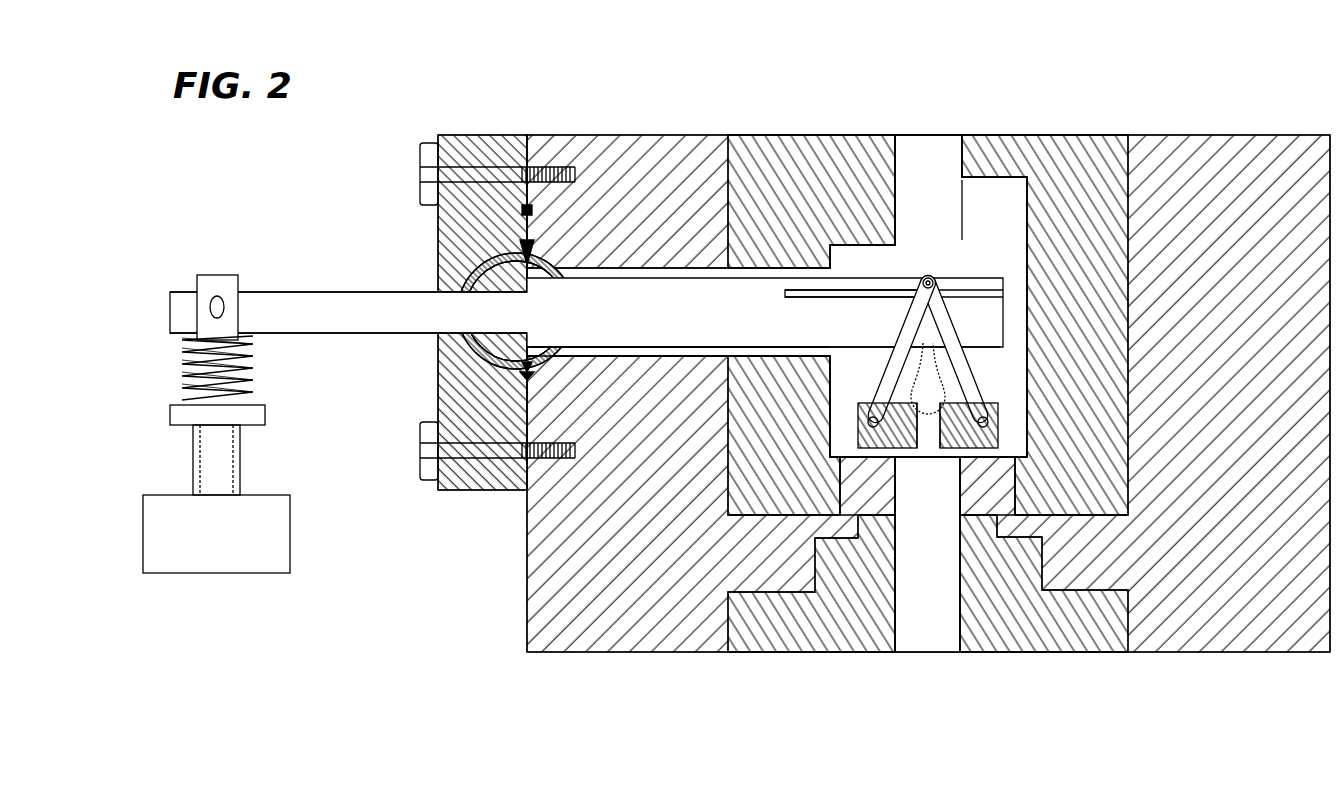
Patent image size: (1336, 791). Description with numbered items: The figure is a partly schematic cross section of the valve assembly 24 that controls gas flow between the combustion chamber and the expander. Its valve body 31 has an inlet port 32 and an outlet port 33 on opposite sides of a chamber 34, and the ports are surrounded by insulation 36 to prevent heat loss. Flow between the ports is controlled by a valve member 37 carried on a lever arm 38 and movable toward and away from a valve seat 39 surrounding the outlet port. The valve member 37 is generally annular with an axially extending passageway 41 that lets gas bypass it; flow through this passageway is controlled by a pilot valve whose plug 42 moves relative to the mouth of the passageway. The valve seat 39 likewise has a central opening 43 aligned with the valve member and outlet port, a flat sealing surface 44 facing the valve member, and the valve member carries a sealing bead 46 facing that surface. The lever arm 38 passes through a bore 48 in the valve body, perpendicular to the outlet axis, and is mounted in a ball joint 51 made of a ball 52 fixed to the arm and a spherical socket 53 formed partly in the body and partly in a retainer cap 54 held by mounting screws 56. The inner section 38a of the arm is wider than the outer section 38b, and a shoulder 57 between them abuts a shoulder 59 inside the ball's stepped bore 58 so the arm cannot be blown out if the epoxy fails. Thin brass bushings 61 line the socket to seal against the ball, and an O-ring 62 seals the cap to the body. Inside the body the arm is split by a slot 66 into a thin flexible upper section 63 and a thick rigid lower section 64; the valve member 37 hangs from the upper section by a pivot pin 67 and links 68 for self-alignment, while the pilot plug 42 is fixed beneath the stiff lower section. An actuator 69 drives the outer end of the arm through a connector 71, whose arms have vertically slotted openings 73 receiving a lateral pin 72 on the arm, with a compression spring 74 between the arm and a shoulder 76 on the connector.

The valve assembly 24 is at (335, 215).
The valve body 31 is at (715, 150).
The inlet port 32 is at (950, 140).
The outlet port 33 is at (900, 640).
The chamber 34 is at (955, 223).
The insulation 36 is at (810, 140).
The valve member 37 is at (870, 390).
The lever arm 38 is at (670, 295).
The inner section of the lever arm 38a is at (640, 342).
The outer section of the lever arm 38b is at (370, 300).
The valve seat 39 is at (895, 500).
The passageway 41 is at (935, 450).
The plug 42 is at (945, 395).
The central opening 43 is at (952, 520).
The sealing surface 44 is at (975, 455).
The sealing bead 46 is at (955, 460).
The bore 48 is at (710, 348).
The ball joint 51 is at (470, 470).
The ball 52 is at (445, 270).
The spherical socket 53 is at (545, 240).
The retainer cap 54 is at (470, 140).
The mounting screws 56 is at (422, 172).
The shoulder 57 is at (435, 382).
The stepped bore 58 is at (435, 398).
The shoulder 59 is at (442, 344).
The bushings 61 is at (438, 230).
The O-ring 62 is at (527, 203).
The upper section 63 is at (962, 286).
The lower section 64 is at (882, 330).
The slot 66 is at (850, 299).
The pivot pin 67 is at (933, 278).
The links 68 is at (948, 335).
The actuator 69 is at (185, 510).
The connector 71 is at (240, 448).
The pin 72 is at (235, 305).
The slotted openings 73 is at (225, 300).
The compression spring 74 is at (258, 375).
The shoulder 76 is at (180, 400).